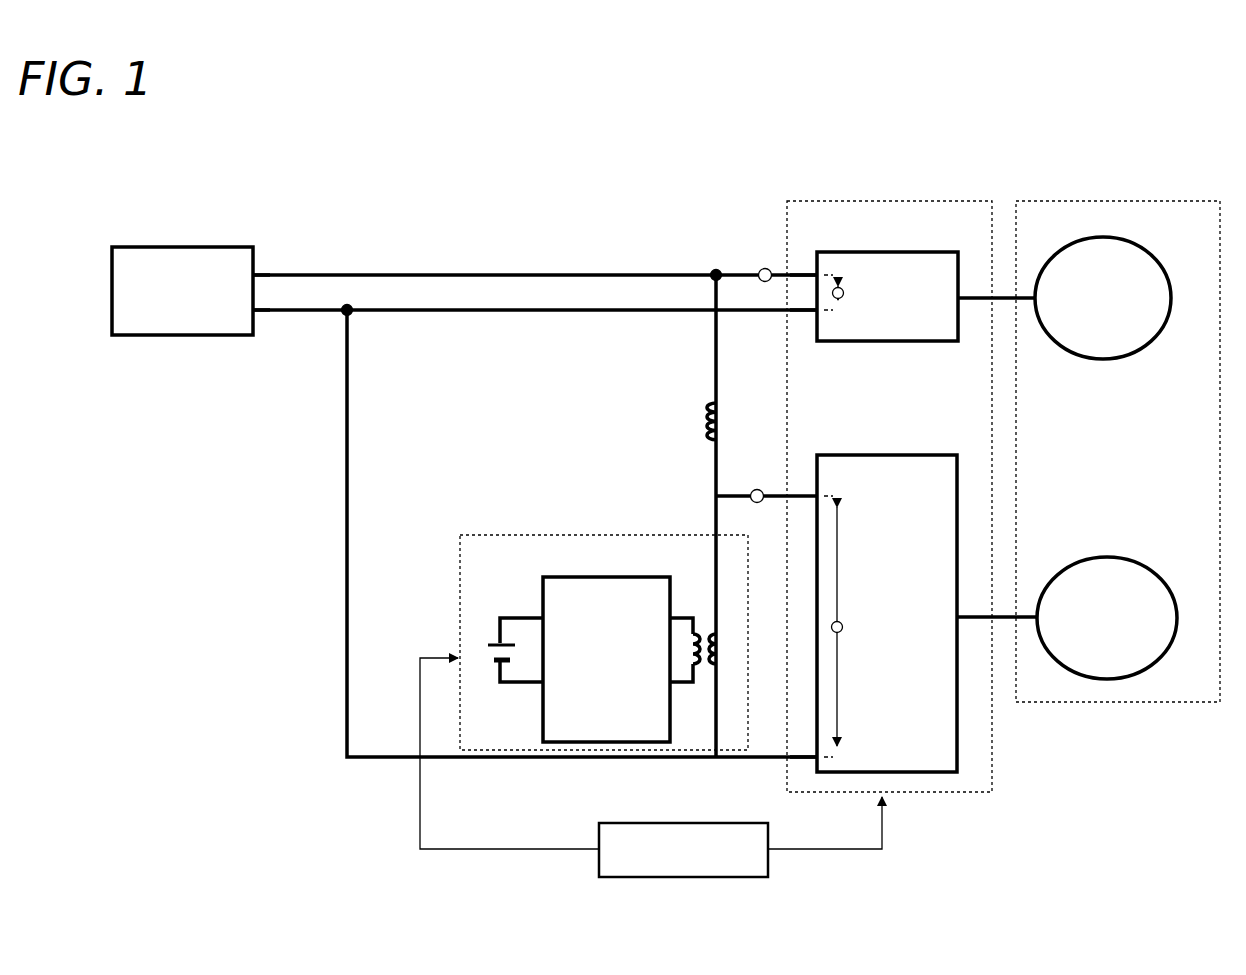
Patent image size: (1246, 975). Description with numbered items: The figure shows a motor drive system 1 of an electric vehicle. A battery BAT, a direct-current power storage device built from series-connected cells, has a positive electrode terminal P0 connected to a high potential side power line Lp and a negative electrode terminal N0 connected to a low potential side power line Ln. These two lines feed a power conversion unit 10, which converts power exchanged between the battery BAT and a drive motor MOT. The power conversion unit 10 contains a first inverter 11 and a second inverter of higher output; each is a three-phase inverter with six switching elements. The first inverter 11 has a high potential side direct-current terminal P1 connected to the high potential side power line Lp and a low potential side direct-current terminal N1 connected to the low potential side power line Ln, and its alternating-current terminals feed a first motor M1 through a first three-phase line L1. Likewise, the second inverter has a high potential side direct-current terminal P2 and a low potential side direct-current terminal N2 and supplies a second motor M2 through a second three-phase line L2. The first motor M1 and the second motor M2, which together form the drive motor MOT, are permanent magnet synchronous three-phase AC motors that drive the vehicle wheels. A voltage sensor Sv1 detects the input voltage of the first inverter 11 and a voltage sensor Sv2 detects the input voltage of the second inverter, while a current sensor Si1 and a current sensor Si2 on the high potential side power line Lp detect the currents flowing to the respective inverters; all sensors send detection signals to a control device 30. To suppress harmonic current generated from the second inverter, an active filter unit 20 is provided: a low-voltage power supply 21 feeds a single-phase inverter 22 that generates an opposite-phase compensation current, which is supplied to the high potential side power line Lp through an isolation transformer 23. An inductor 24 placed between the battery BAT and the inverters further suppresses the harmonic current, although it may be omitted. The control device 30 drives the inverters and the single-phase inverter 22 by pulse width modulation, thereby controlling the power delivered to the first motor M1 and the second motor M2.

The motor drive system 1 is at (692, 102).
The battery BAT is at (204, 246).
The positive electrode terminal P0 is at (268, 262).
The negative electrode terminal N0 is at (269, 325).
The high potential side power line Lp is at (557, 272).
The low potential side power line Ln is at (511, 314).
The current sensor Si1 is at (762, 268).
The current sensor Si2 is at (756, 489).
The high potential side direct-current terminal P1 is at (803, 262).
The low potential side direct-current terminal N1 is at (804, 324).
The low potential side direct-current terminal N2 is at (803, 771).
The power conversion unit 10 is at (835, 200).
The first inverter 11 is at (908, 250).
The high potential side direct-current terminal P2 is at (906, 454).
The voltage sensor Sv1 is at (838, 300).
The voltage sensor Sv2 is at (840, 632).
The first three-phase line L1 is at (975, 300).
The second three-phase line L2 is at (976, 620).
The drive motor MOT is at (1155, 200).
The first motor M1 is at (1142, 249).
The second motor M2 is at (1143, 568).
The inductor 24 is at (700, 418).
The active filter unit 20 is at (480, 534).
The low-voltage power supply 21 is at (494, 640).
The single-phase inverter 22 is at (541, 721).
The isolation transformer 23 is at (700, 634).
The control device 30 is at (710, 822).